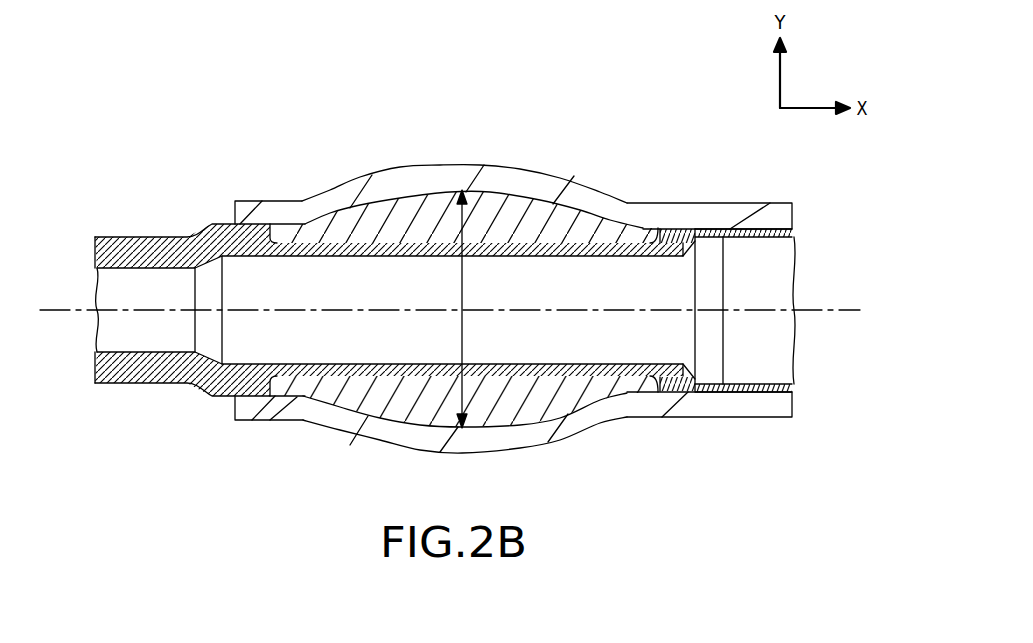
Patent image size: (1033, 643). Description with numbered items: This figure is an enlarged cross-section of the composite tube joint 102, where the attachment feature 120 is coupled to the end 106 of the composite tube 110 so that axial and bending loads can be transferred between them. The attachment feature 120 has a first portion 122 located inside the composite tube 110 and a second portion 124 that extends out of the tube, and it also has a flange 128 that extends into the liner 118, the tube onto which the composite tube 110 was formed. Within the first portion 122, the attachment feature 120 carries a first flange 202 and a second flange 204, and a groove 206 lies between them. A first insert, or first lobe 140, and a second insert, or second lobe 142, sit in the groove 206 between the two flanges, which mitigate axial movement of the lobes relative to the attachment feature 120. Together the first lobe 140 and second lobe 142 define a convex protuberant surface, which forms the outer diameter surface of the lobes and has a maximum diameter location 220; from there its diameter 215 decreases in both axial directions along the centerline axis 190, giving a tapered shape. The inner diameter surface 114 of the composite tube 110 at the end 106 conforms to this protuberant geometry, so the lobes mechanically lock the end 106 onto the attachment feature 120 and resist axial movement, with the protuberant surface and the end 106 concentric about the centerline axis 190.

The composite tube joint 102 is at (268, 86).
The end of composite tube 106 is at (255, 199).
The composite tube 110 is at (676, 204).
The inner diameter surface 114 is at (396, 417).
The liner 118 is at (756, 236).
The attachment feature 120 is at (126, 236).
The first portion of attachment feature 122 is at (258, 376).
The second portion of attachment feature 124 is at (148, 374).
The flange 128 is at (720, 372).
The first insert 140 is at (378, 210).
The second insert 142 is at (560, 399).
The centerline axis 190 is at (46, 313).
The first flange 202 is at (281, 240).
The second flange 204 is at (660, 236).
The groove 206 is at (510, 242).
The diameter 215 is at (464, 285).
The maximum diameter location 220 is at (462, 195).